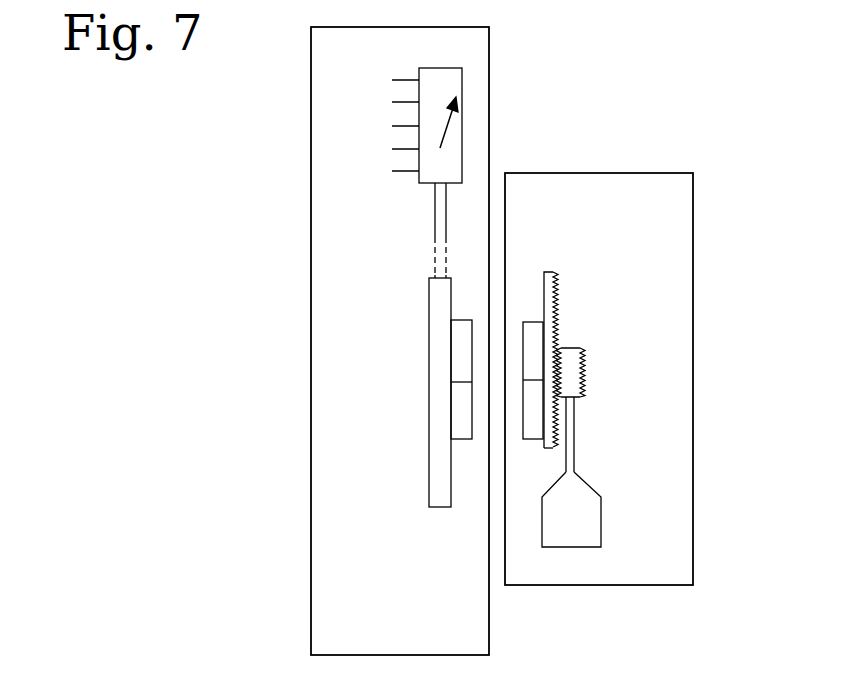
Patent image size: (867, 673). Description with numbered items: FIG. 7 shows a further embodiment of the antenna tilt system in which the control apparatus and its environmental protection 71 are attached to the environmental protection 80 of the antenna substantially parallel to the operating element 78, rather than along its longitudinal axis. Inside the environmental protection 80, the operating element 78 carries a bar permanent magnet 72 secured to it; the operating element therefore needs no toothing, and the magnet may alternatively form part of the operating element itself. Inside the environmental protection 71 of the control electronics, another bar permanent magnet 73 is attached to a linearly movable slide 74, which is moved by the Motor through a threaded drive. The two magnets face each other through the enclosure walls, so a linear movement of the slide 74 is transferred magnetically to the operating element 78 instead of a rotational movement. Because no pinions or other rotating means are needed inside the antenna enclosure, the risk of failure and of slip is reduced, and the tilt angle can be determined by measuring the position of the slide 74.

The environmental protection of the control apparatus 71 is at (693, 325).
The bar permanent magnet 72 is at (463, 432).
The bar permanent magnet 73 is at (533, 432).
The linearly movable slide 74 is at (552, 275).
The operating element 78 is at (439, 385).
The environmental protection of the antenna 80 is at (489, 75).
The motor Motor is at (588, 522).